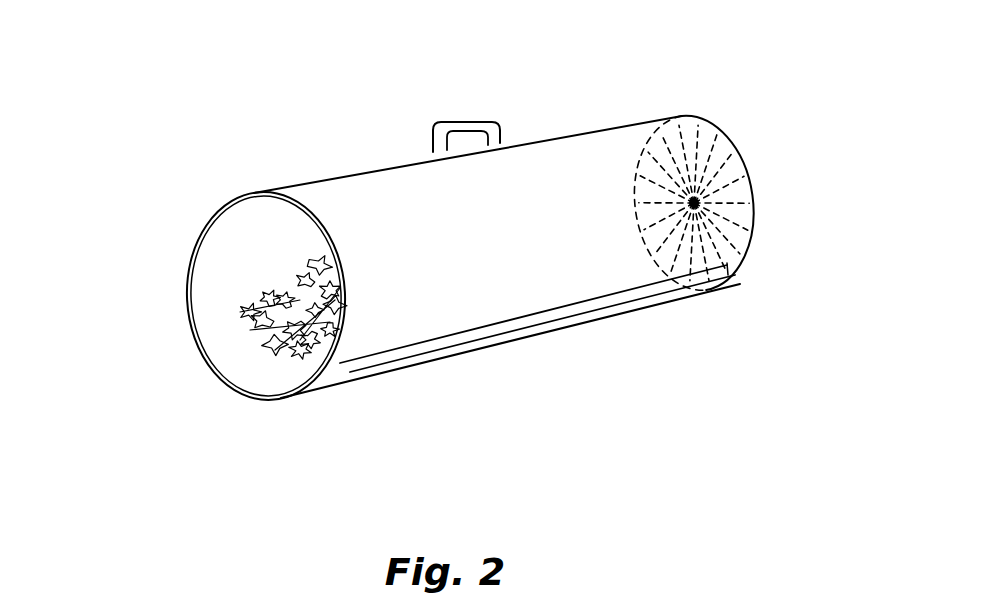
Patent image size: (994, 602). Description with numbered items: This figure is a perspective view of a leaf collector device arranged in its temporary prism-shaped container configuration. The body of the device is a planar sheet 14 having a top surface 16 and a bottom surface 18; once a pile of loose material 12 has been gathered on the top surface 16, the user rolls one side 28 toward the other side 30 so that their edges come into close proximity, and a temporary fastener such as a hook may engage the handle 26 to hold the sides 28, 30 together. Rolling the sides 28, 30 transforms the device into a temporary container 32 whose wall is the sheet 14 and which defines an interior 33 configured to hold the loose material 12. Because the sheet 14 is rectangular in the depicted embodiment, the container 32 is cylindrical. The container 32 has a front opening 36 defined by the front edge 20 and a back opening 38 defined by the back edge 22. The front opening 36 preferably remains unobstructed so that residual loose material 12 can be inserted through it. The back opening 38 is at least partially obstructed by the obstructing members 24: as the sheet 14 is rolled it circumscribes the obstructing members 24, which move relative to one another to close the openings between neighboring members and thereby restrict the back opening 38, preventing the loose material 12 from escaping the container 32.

The loose material 12 is at (285, 335).
The planar sheet 14 is at (500, 304).
The top surface 16 is at (213, 280).
The bottom surface 18 is at (405, 296).
The front edge 20 is at (193, 360).
The back edge 22 is at (747, 138).
The obstructing members 24 is at (751, 170).
The handle 26 is at (480, 122).
The one side 28 is at (525, 127).
The other side 30 is at (605, 110).
The temporary container 32 is at (238, 138).
The interior 33 is at (285, 224).
The front opening 36 is at (230, 253).
The back opening 38 is at (740, 272).